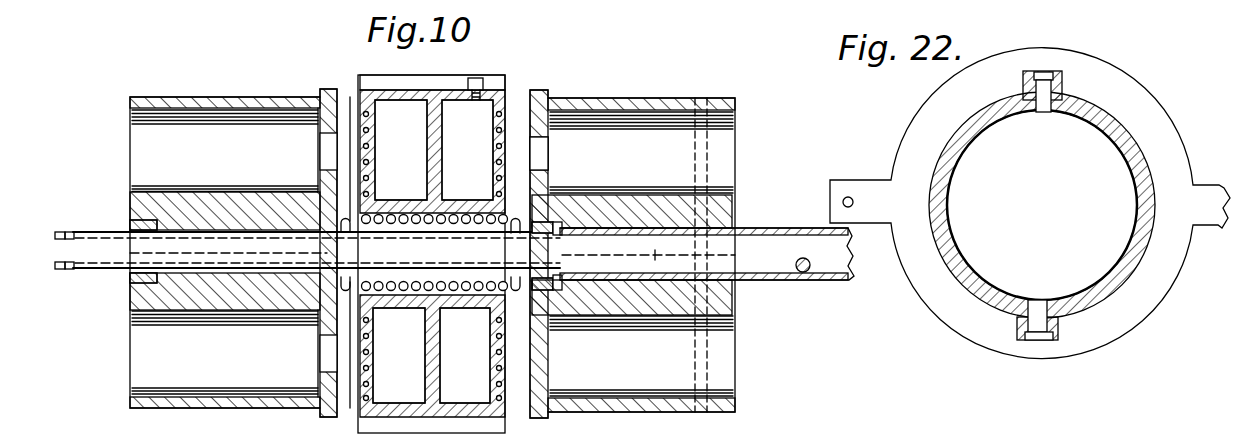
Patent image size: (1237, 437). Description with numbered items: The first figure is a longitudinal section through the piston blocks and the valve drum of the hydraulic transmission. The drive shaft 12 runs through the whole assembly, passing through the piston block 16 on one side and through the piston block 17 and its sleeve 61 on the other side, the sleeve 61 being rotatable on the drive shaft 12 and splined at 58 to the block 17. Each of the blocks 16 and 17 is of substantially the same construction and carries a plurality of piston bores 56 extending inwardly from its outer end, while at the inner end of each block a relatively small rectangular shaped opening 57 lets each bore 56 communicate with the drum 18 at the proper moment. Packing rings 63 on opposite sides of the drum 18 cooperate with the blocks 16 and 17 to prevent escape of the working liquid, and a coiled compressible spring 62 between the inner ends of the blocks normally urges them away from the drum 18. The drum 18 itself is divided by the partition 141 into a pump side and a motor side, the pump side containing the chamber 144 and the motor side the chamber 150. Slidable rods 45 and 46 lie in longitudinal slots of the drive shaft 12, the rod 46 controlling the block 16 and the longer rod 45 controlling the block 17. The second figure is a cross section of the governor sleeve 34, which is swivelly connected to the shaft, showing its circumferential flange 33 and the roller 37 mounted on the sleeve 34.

In FIG. 10, the drive shaft 12 is at (110, 262).
In FIG. 10, the piston block 16 is at (228, 96).
In FIG. 10, the piston block 17 is at (610, 97).
In FIG. 10, the drum 18 is at (497, 73).
In FIG. 22, the circumferential flange 33 is at (1167, 142).
In FIG. 22, the sleeve 34 is at (1120, 123).
In FIG. 22, the roller 37 is at (1062, 72).
In FIG. 10, the slidable rod 45 is at (70, 232).
In FIG. 10, the slidable rod 46 is at (75, 233).
In FIG. 10, the piston bore 56 is at (163, 145).
In FIG. 10, the rectangular shaped opening 57 is at (340, 133).
In FIG. 10, the spline 58 is at (732, 287).
In FIG. 10, the sleeve 61 is at (750, 228).
In FIG. 10, the coiled compressible spring 62 is at (512, 228).
In FIG. 10, the packing ring 63 is at (505, 113).
In FIG. 10, the partition 141 is at (408, 116).
In FIG. 10, the chamber 144 is at (409, 166).
In FIG. 10, the chamber 150 is at (480, 165).